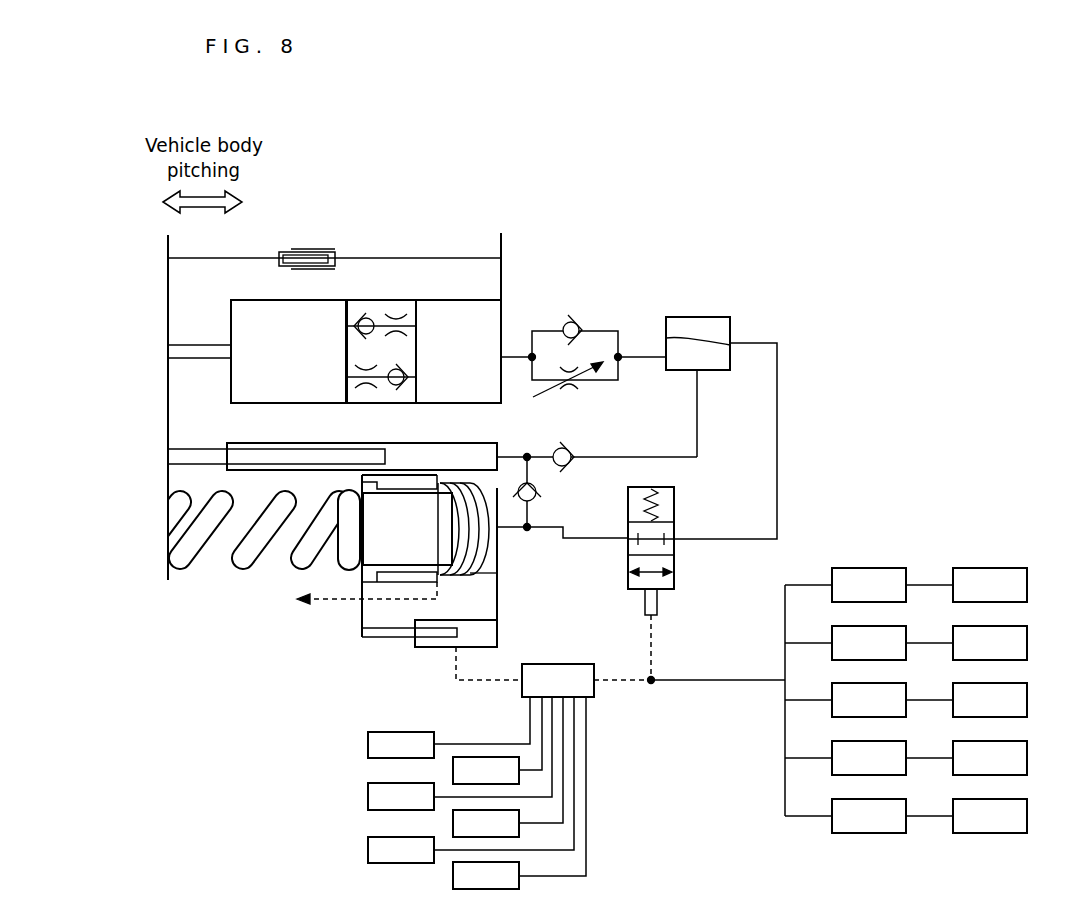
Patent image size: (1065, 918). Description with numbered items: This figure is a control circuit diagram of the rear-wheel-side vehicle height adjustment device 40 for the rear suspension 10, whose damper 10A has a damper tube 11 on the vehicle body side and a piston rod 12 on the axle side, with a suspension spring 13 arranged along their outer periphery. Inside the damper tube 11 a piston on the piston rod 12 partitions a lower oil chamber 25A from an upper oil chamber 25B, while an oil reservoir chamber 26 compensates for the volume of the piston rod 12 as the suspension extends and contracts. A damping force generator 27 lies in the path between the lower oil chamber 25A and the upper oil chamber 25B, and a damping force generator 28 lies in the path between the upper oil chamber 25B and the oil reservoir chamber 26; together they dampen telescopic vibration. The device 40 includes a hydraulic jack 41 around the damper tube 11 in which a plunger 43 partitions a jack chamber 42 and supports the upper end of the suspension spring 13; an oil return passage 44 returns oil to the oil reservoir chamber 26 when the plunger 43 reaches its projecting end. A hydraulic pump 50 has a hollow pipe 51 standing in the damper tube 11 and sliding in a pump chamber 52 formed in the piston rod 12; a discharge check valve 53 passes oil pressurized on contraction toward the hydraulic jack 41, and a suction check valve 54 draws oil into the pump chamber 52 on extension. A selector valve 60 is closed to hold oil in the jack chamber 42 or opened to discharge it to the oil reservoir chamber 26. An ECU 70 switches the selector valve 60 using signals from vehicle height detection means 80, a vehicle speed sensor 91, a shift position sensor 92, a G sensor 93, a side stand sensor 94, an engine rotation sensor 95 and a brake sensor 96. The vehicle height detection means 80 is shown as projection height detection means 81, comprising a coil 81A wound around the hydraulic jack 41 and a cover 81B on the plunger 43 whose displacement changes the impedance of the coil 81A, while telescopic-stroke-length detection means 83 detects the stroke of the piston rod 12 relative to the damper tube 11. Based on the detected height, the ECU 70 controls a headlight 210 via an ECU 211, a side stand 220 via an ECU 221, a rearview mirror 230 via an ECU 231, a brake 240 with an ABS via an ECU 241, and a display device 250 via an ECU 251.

The rear suspension 10 is at (124, 277).
The damper 10A is at (244, 300).
The damper tube 11 is at (461, 297).
The piston rod 12 is at (200, 345).
The suspension spring 13 is at (200, 537).
The lower oil chamber 25A is at (465, 330).
The upper oil chamber 25B is at (287, 322).
The oil reservoir chamber 26 is at (717, 362).
The damping force generator 27 is at (398, 318).
The damping force generator 28 is at (567, 388).
The rear-wheel-side vehicle height adjustment device 40 is at (280, 624).
The hydraulic jack 41 is at (498, 557).
The jack chamber 42 is at (493, 542).
The plunger 43 is at (385, 538).
The oil return passage 44 is at (333, 600).
The hydraulic pump 50 is at (313, 443).
The hollow pipe 51 is at (202, 449).
The pump chamber 52 is at (445, 453).
The discharge check valve 53 is at (537, 500).
The suction check valve 54 is at (575, 468).
The selector valve 60 is at (674, 564).
The ECU 70 is at (595, 688).
The vehicle height detection means 80 is at (430, 647).
The projection height detection means 81 is at (442, 647).
The coil 81A is at (498, 573).
The cover 81B is at (400, 585).
The telescopic-stroke-length detection means 83 is at (317, 250).
The vehicle speed sensor 91 is at (401, 745).
The shift position sensor 92 is at (486, 770).
The G sensor 93 is at (401, 796).
The side stand sensor 94 is at (486, 823).
The engine rotation sensor 95 is at (401, 850).
The brake sensor 96 is at (486, 875).
The headlight 210 is at (990, 585).
The ECU for the headlight 211 is at (884, 568).
The side stand 220 is at (990, 643).
The ECU for the side stand 221 is at (884, 626).
The rearview mirror 230 is at (990, 700).
The ECU for the rearview mirror 231 is at (884, 683).
The brake with an ABS 240 is at (990, 758).
The ECU for the brake with the ABS 241 is at (884, 741).
The display device 250 is at (990, 816).
The ECU for the display device 251 is at (884, 799).